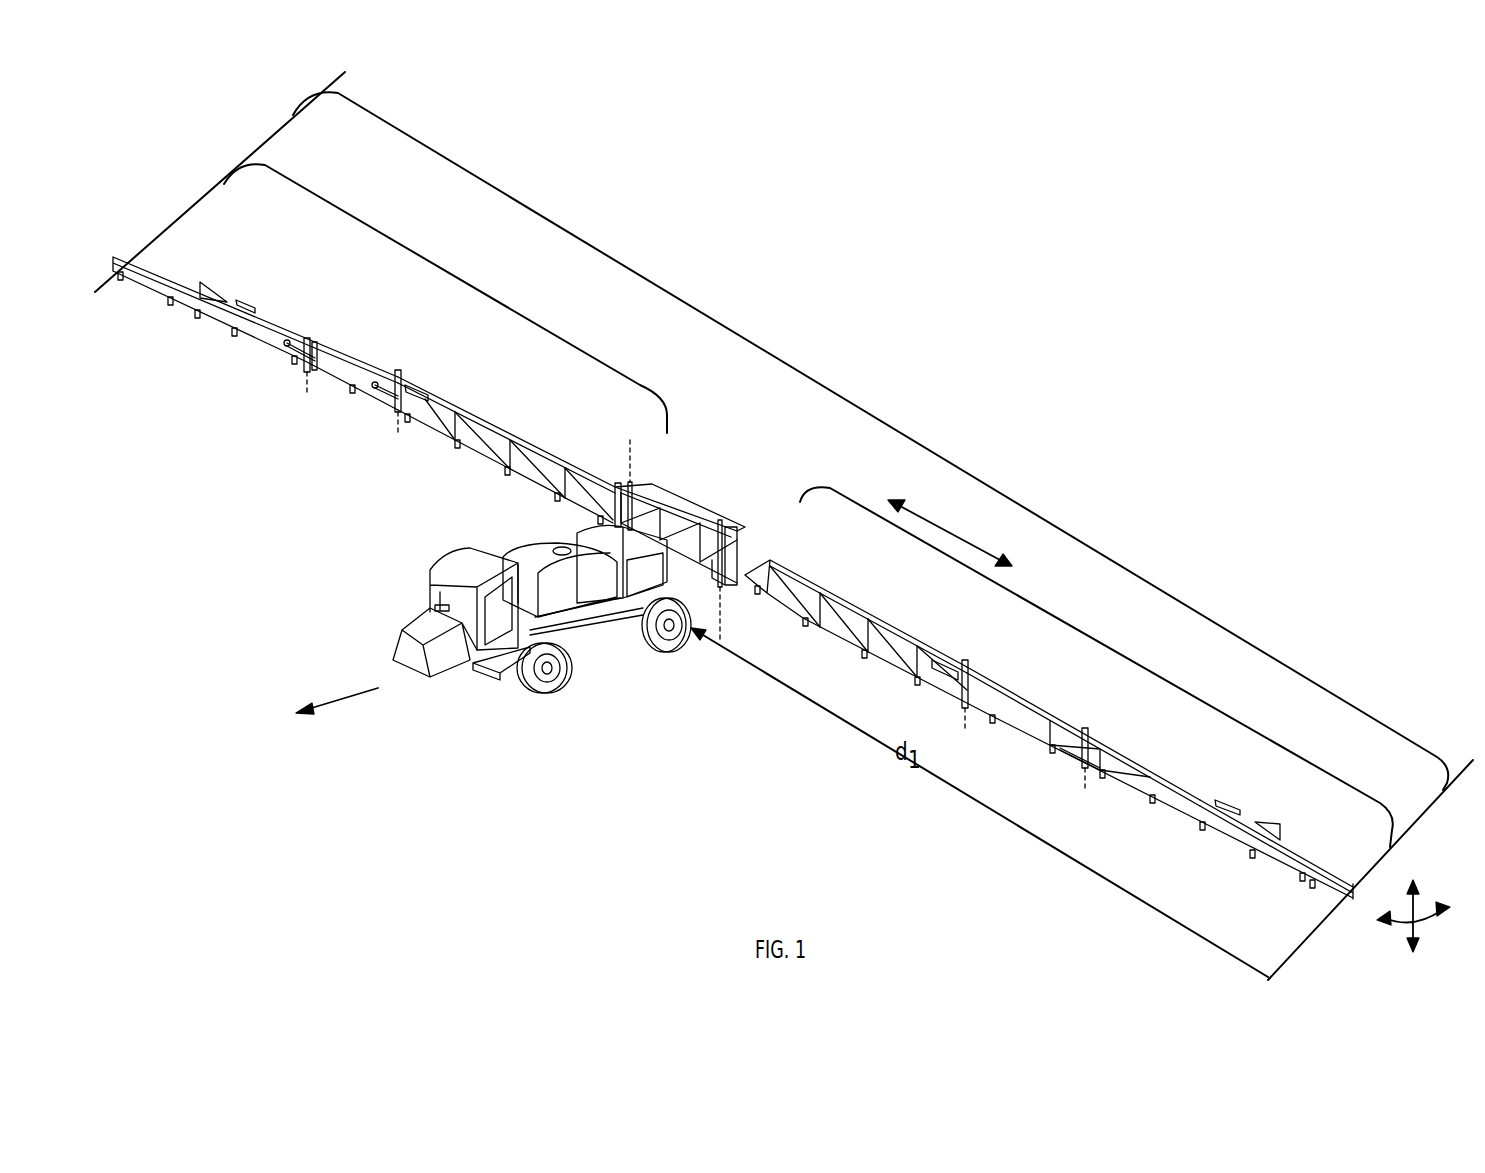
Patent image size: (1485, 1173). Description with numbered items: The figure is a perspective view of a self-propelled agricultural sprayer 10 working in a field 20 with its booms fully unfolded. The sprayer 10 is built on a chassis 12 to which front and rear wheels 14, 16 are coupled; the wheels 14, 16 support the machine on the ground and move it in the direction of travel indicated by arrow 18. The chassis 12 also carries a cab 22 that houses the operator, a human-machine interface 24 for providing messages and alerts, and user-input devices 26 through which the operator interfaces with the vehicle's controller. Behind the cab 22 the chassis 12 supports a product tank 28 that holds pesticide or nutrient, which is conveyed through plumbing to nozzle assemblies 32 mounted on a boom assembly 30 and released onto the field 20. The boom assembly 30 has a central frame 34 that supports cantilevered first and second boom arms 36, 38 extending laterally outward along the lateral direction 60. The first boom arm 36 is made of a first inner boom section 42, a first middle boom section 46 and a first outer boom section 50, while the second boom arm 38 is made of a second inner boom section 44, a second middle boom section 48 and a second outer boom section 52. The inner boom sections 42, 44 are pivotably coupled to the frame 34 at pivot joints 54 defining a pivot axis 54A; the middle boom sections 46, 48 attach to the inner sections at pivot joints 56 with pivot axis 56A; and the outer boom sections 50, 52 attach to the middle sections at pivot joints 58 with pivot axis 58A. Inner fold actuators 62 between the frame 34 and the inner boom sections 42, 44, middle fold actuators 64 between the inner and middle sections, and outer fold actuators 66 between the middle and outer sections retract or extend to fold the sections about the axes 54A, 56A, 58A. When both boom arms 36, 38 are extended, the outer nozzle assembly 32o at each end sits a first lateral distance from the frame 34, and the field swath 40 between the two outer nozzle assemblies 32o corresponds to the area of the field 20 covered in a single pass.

The agricultural sprayer 10 is at (780, 300).
The chassis 12 is at (583, 642).
The front wheels 14 is at (550, 694).
The rear wheels 16 is at (700, 640).
The arrow 18 is at (372, 690).
The field 20 is at (709, 769).
The cab 22 is at (450, 566).
The human-machine interface 24 is at (433, 604).
The user-input devices 26 is at (435, 608).
The product tank 28 is at (530, 552).
The boom assembly 30 is at (745, 420).
The nozzle assemblies 32 is at (168, 306).
The outer nozzle assembly 32o is at (120, 281).
The frame 34 is at (700, 497).
The first boom arm 36 is at (1110, 628).
The second boom arm 38 is at (463, 277).
The field swath 40 is at (857, 402).
The first inner boom section 42 is at (850, 602).
The second inner boom section 44 is at (487, 415).
The first middle boom section 46 is at (1050, 715).
The second middle boom section 48 is at (350, 352).
The first outer boom section 50 is at (1160, 782).
The second outer boom section 52 is at (306, 336).
The pivot joints 54 is at (640, 492).
The pivot axis 54A is at (634, 480).
The pivot joints 56 is at (402, 378).
The pivot axis 56A is at (398, 435).
The pivot joints 58 is at (316, 342).
The pivot axis 58A is at (307, 392).
The lateral direction 60 is at (955, 535).
The inner fold actuators 62 is at (615, 470).
The middle fold actuators 64 is at (418, 394).
The outer fold actuators 66 is at (312, 372).